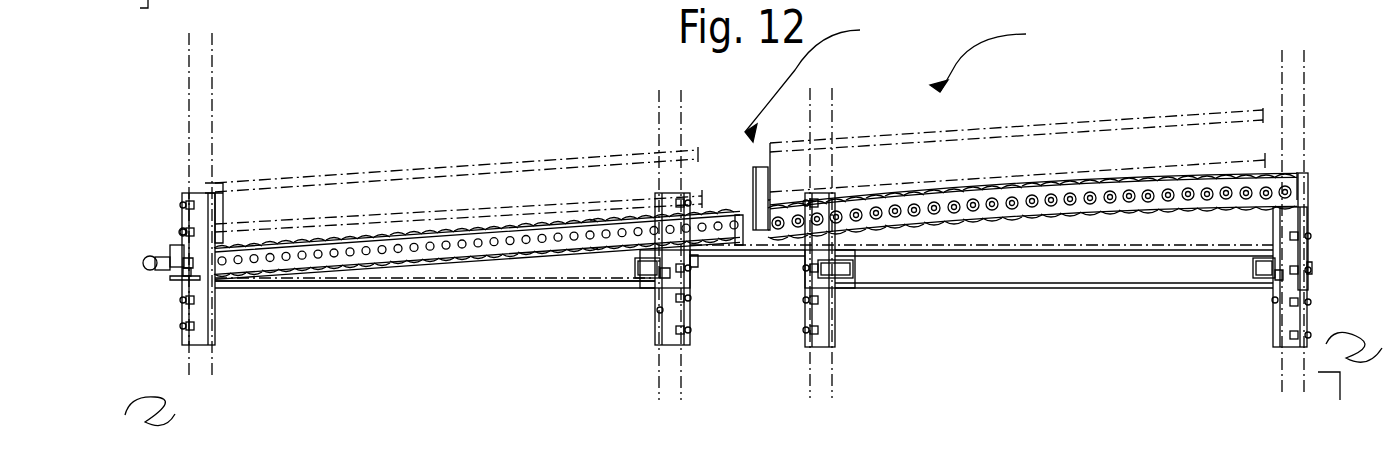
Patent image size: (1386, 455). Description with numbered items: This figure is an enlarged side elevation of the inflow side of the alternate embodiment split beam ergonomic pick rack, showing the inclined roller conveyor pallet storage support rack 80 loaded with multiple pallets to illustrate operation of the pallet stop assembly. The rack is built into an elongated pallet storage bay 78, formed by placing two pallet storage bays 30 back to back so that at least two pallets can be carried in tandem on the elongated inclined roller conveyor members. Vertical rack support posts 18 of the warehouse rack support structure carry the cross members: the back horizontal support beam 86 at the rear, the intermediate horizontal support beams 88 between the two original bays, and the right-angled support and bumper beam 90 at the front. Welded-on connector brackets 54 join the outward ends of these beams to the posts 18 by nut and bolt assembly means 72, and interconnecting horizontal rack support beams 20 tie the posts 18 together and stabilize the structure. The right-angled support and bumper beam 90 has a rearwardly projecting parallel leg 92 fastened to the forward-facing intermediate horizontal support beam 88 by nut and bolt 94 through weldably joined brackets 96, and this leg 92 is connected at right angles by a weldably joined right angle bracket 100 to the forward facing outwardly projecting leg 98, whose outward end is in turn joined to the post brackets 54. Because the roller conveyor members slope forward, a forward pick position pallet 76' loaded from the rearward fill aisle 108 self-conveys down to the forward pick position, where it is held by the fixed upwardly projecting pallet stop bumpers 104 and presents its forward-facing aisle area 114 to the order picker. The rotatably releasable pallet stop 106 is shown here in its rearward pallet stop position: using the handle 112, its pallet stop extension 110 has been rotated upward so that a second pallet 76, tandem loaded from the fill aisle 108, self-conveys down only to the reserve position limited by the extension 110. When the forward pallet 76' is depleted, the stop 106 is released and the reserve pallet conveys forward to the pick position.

The vertical rack support post 18 is at (212, 83).
The horizontal rack support beam 20 is at (336, 175).
The pallet storage bay 30 is at (990, 58).
The connector bracket 54 is at (215, 305).
The nut and bolt assembly means 72 is at (180, 205).
The pallet 76 is at (981, 154).
The forward pick position pallet 76' is at (458, 178).
The elongated pallet storage bay 78 is at (1066, 76).
The inclined roller conveyor pallet storage support rack 80 is at (814, 81).
The back horizontal support beam 86 is at (1308, 242).
The intermediate horizontal support beam 88 is at (666, 275).
The right-angled support and bumper beam 90 is at (190, 276).
The rearwardly projecting parallel leg 92 is at (406, 291).
The nut and bolt 94 is at (182, 262).
The bracket 96 is at (184, 268).
The forward facing outwardly projecting leg 98 is at (183, 231).
The right angle bracket 100 is at (183, 279).
The pallet stop bumper 104 is at (218, 214).
The rotatably releasable pallet stop 106 is at (495, 243).
The rearward fill aisle 108 is at (1378, 4).
The pallet stop extension 110 is at (753, 188).
The handle 112 is at (155, 258).
The forward-facing aisle area 114 is at (147, 8).